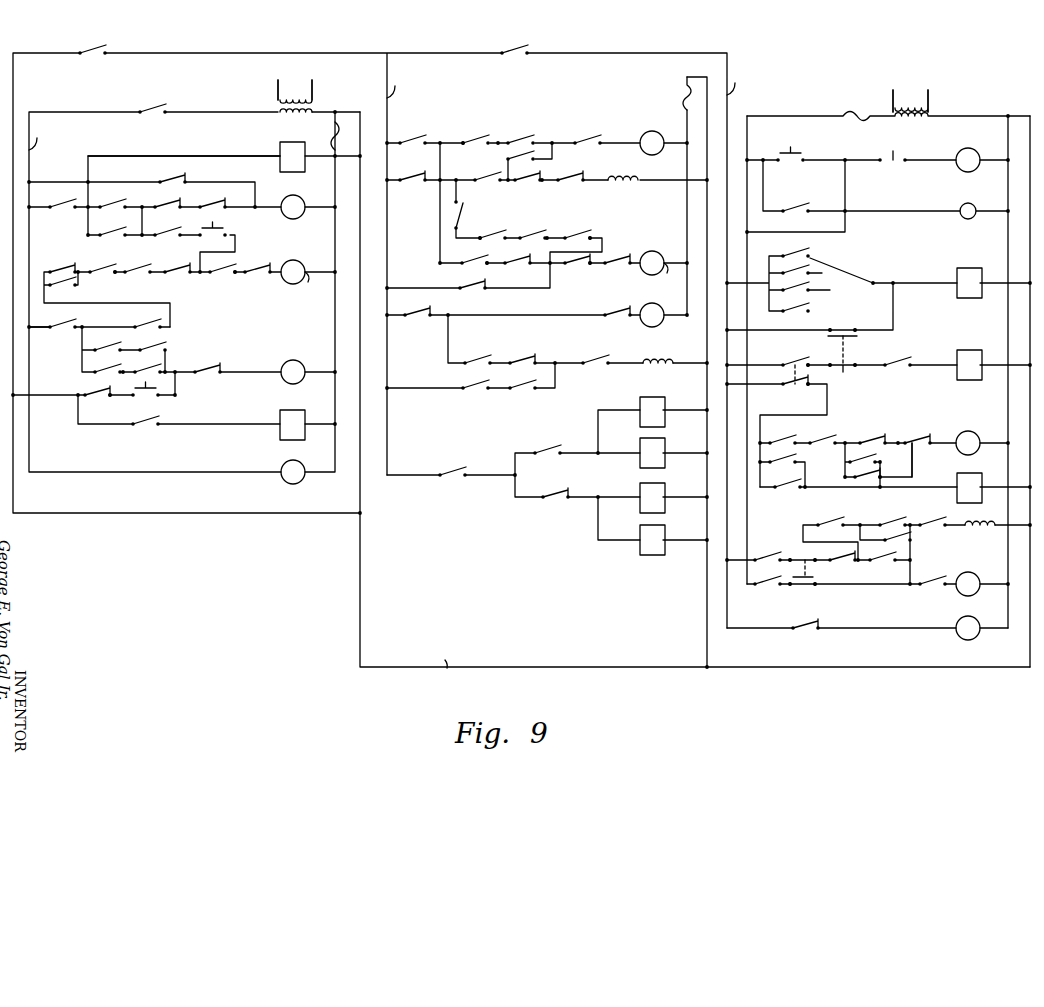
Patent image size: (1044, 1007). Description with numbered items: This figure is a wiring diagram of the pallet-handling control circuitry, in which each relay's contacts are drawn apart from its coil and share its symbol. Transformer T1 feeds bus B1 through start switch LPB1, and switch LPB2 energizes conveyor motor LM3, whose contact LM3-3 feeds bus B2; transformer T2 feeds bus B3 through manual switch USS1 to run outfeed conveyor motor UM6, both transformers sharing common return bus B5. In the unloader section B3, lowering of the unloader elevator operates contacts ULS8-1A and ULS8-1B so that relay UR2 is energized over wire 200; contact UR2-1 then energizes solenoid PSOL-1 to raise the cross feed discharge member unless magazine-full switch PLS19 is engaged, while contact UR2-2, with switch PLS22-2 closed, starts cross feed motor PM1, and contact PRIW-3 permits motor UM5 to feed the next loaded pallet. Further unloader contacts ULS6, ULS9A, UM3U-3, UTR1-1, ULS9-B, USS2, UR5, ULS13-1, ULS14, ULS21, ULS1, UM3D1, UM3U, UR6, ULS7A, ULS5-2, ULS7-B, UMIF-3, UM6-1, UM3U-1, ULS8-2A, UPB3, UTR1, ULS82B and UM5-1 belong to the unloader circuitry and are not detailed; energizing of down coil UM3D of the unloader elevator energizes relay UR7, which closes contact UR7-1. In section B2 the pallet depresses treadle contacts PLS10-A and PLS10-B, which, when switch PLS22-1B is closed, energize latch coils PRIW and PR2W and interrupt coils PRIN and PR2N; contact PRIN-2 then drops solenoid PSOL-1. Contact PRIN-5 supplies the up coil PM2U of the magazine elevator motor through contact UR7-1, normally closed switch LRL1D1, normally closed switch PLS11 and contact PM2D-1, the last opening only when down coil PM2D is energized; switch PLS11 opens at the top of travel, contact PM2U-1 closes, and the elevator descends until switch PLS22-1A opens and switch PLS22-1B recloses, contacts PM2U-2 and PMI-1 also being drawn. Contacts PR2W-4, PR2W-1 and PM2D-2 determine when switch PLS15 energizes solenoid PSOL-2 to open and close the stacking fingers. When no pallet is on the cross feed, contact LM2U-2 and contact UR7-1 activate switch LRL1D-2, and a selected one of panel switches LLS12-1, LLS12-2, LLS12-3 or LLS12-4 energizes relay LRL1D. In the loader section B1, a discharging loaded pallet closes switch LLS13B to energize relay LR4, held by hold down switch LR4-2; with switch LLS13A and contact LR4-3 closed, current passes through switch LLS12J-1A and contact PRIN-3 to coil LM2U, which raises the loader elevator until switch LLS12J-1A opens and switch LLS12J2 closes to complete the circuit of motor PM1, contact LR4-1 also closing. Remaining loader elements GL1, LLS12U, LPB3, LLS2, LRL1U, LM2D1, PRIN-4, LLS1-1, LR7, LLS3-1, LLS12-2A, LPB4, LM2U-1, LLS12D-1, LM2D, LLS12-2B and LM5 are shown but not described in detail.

The control circuit section B1 is at (742, 84).
The control circuit section B2 is at (398, 89).
The control circuit section B3 is at (43, 140).
The control circuit section B5 is at (434, 658).
The conductor 200 is at (176, 156).
The relay UM6 and its contact UM6 is at (93, 60).
The selector switch USS1 is at (165, 104).
The transformer T2 is at (281, 95).
The relay UR2 is at (293, 145).
The limit switch ULS6 is at (187, 179).
The limit switch contact ULS8-1B is at (54, 199).
The relay contact PRIW-3 is at (109, 199).
The limit switch ULS9A is at (162, 204).
The relay contact UM3U-3 is at (220, 204).
The relay UM5 is at (291, 203).
The timer contact UTR1-1 is at (112, 227).
The limit switch ULS9-B is at (164, 227).
The push button USS2 is at (232, 229).
The relay contact UR5 is at (57, 269).
The limit switch contact ULS13-1 is at (105, 264).
The limit switch ULS14 is at (126, 281).
The limit switch ULS21 is at (170, 269).
The limit switch ULS1 is at (212, 281).
The relay UM3D1 is at (274, 269).
The relay UM3U is at (285, 285).
The relay contact UR6 is at (64, 290).
The limit switch ULS7A is at (77, 320).
The limit switch contact ULS5-2 is at (173, 320).
The limit switch contact ULS8-1A is at (45, 344).
The limit switch ULS7-B is at (107, 343).
The relay contact UMIF-3 is at (168, 343).
The relay contact UM6-1 is at (103, 365).
The relay contact UR7 is at (147, 365).
The relay contact UM3U-1 is at (224, 369).
The relay UM3D is at (305, 375).
The limit switch contact ULS8-2A is at (83, 393).
The push button UPB3 is at (150, 399).
The timer UTR1 is at (278, 418).
The limit switch contact ULS8-2B ULS82B is at (152, 428).
The relay contact LM3-3 is at (514, 60).
The relay contact PRIN-5 is at (410, 138).
The limit switch contact LLS12J2 is at (466, 132).
The relay contact LR4-1 is at (522, 133).
The limit switch contact PLS22-2 is at (579, 133).
The relay PM1 is at (652, 136).
The relay contact PRIN-2 is at (410, 177).
The relay contact UR2-1 is at (474, 174).
The relay contact UR2-2 is at (511, 153).
The limit switch PLS19 is at (553, 179).
The relay contact UM5-1 is at (565, 189).
The solenoid PSOL-1 is at (639, 171).
The relay contact LM2U-2 is at (671, 350).
The relay contact PM1-1 PMI-1 is at (488, 229).
The relay contact UR7-1 is at (496, 243).
The relay contact LRL1D-2 is at (601, 229).
The relay contact LRL1D-1 LRL1D1 is at (518, 262).
The limit switch PLS11 is at (573, 272).
The relay contact PM2D-1 is at (636, 260).
The relay contact PM2U-2 is at (449, 290).
The relay PM2U is at (557, 338).
The limit switch contact PLS22-1A is at (447, 314).
The relay contact PM2U-1 is at (598, 314).
The relay PM2D is at (640, 323).
The relay contact PM2D-2 is at (479, 354).
The relay contact PR2W-1 is at (530, 353).
The limit switch PLS15 is at (585, 354).
The solenoid PSOL-2 is at (646, 353).
The relay contact PR2W-4 is at (530, 392).
The relay PRIW is at (655, 399).
The relay PR2W is at (654, 448).
The limit switch contact PLS10-A is at (544, 446).
The limit switch contact PLS22-1B is at (451, 467).
The limit switch contact PLS10-B is at (549, 494).
The relay PRIN is at (637, 486).
The relay PR2N is at (637, 536).
The transformer T1 is at (930, 108).
The push button LPB1 is at (803, 149).
The push button LPB2 is at (904, 150).
The relay LM3 is at (966, 152).
The indicator lamp GL1 is at (962, 206).
The limit switch contact LLS12-1 is at (820, 249).
The limit switch contact LLS12-2 is at (832, 265).
The limit switch contact LLS12-3 is at (829, 291).
The limit switch contact LLS12-4 is at (816, 315).
The relay LRL1D is at (975, 271).
The limit switch LLS12U is at (782, 371).
The push button LPB3 is at (856, 347).
The limit switch LLS2 is at (891, 372).
The relay LRL1U and its contacts LRL1U is at (916, 460).
The limit switch LLS13A is at (778, 426).
The relay contact LR4-3 is at (824, 435).
The limit switch contact LLS12J-1A is at (867, 434).
The relay contact PRIN-3 is at (916, 442).
The relay LM2D1 is at (966, 436).
The limit switch LLS13B is at (784, 457).
The relay contact LM2U is at (982, 454).
The relay contact PRIN-4 is at (933, 461).
The relay contact LR4-2 is at (778, 493).
The relay LR4 and its contact LR4 is at (957, 493).
The limit switch contact LLS1-1 is at (825, 516).
The relay LR7 and its contact LR7 is at (956, 516).
The limit switch contact LLS3-1 is at (916, 535).
The limit switch contact LLS12-2A is at (768, 544).
The push button LPB4 is at (819, 580).
The relay contact LM2U-1 is at (941, 573).
The limit switch contact LLS12D-1 is at (759, 591).
The relay LM2D is at (956, 595).
The limit switch contact LLS12-2B is at (782, 628).
The relay LM5 is at (955, 624).